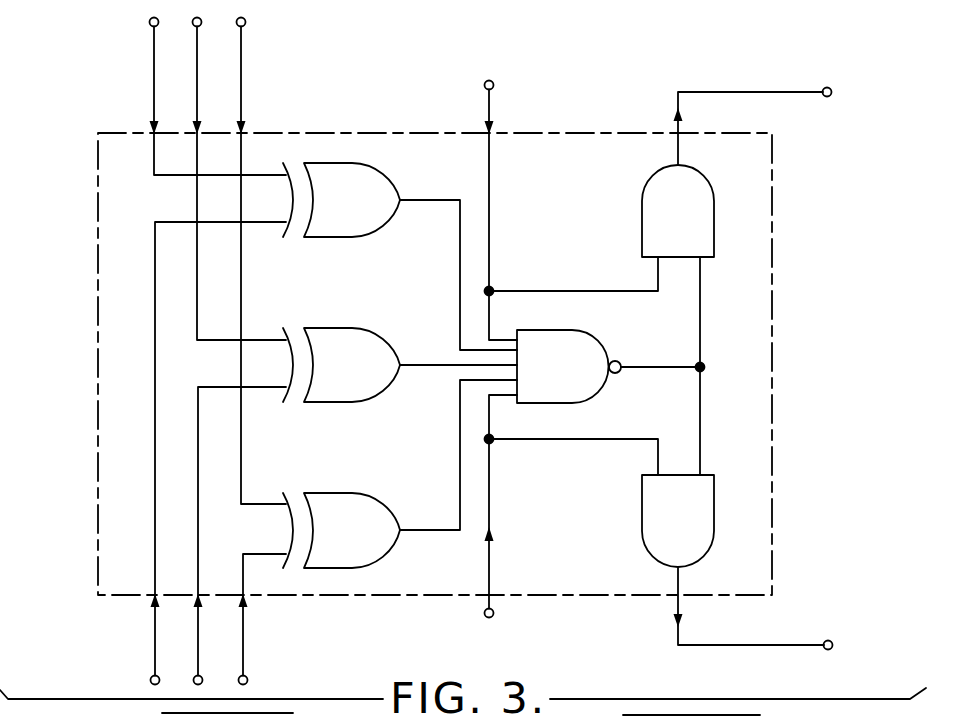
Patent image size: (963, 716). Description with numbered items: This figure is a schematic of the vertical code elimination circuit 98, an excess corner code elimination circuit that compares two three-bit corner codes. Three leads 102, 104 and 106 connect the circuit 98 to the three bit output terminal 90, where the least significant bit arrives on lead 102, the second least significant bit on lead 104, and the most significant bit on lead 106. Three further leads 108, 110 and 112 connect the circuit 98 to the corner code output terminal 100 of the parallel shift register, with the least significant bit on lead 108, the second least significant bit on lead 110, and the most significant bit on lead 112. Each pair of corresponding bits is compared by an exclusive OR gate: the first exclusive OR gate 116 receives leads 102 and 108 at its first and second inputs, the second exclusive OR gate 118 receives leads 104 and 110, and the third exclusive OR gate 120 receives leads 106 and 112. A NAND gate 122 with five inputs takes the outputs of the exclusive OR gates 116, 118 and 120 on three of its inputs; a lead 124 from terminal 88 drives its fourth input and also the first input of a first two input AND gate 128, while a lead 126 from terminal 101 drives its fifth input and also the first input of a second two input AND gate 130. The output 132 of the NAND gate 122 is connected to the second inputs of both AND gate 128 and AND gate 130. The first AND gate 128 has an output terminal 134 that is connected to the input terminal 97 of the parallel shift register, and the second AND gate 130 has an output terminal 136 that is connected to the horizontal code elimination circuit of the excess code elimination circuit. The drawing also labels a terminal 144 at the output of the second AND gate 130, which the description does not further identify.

The terminal 88 is at (478, 68).
The three bit output terminal 90 is at (268, 105).
The input terminal 97 is at (858, 146).
The vertical code elimination circuit 98 is at (625, 133).
The corner code output terminal 100 is at (128, 659).
The terminal 101 is at (470, 676).
The lead 102 is at (154, 55).
The lead 104 is at (197, 82).
The lead 106 is at (242, 53).
The lead 108 is at (155, 625).
The lead 110 is at (198, 623).
The lead 112 is at (243, 648).
The first exclusive OR gate 116 is at (386, 164).
The second exclusive OR gate 118 is at (381, 328).
The third exclusive OR gate 120 is at (375, 494).
The NAND gate 122 is at (579, 330).
The lead 124 is at (490, 100).
The lead 126 is at (490, 565).
The first two input AND gate 128 is at (642, 203).
The second two input AND gate 130 is at (642, 498).
The output 132 is at (624, 371).
The output terminal 134 is at (744, 92).
The output terminal 136 is at (782, 645).
The output terminal 144 is at (885, 698).